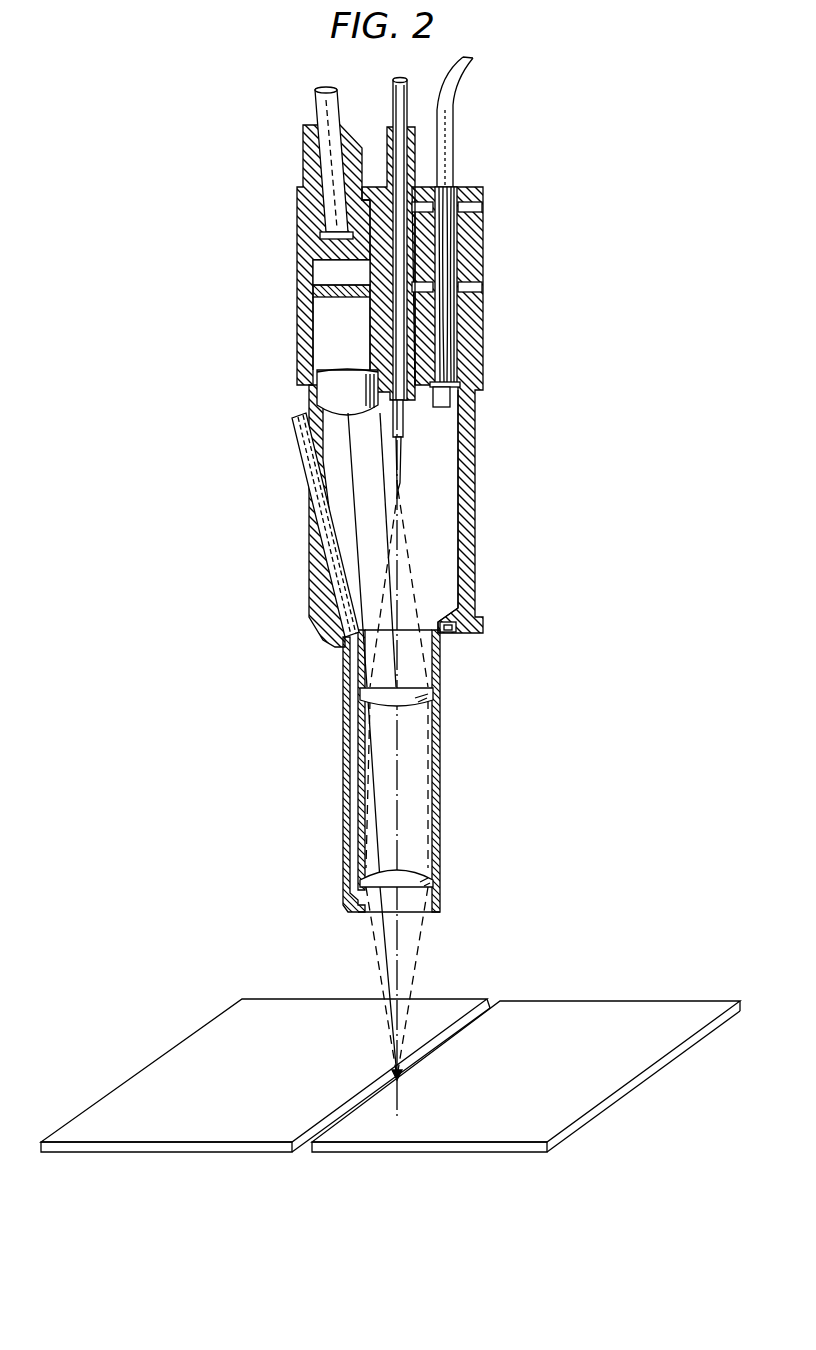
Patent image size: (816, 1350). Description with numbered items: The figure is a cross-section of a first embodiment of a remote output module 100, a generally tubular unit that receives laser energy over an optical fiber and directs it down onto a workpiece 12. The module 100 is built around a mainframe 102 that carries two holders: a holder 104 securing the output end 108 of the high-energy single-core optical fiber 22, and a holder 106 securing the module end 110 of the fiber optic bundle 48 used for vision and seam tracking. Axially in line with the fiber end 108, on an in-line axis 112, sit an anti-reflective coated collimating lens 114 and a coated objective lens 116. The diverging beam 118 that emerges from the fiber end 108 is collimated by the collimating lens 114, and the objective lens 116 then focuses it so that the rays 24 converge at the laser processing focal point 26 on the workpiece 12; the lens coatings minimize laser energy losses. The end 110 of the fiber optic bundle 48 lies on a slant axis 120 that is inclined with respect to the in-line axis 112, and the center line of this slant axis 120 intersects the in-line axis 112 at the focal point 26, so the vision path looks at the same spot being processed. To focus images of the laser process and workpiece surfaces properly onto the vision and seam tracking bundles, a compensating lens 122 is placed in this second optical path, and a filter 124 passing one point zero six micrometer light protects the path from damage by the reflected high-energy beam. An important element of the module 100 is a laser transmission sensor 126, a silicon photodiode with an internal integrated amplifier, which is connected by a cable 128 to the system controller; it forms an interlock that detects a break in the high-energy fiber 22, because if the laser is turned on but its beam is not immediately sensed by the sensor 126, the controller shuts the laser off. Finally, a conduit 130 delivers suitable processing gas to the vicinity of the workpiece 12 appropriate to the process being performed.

The workpiece 12 is at (583, 1010).
The single-core optical fiber 22 is at (396, 100).
The rays 24 is at (418, 958).
The laser processing focal point 26 is at (393, 1073).
The fiber optic bundle 48 is at (318, 110).
The remote module 100 is at (633, 190).
The mainframe 102 is at (484, 251).
The holder 104 is at (423, 186).
The holder 106 is at (305, 166).
The output end 108 is at (400, 488).
The module end 110 is at (330, 265).
The in-line axis 112 is at (400, 608).
The collimating lens 114 is at (430, 700).
The objective lens 116 is at (420, 870).
The diverging beam 118 is at (408, 760).
The slant axis 120 is at (352, 468).
The compensating lens 122 is at (335, 390).
The filter 124 is at (333, 292).
The laser transmission sensor 126 is at (450, 400).
The cable 128 is at (450, 125).
The conduit 130 is at (300, 448).